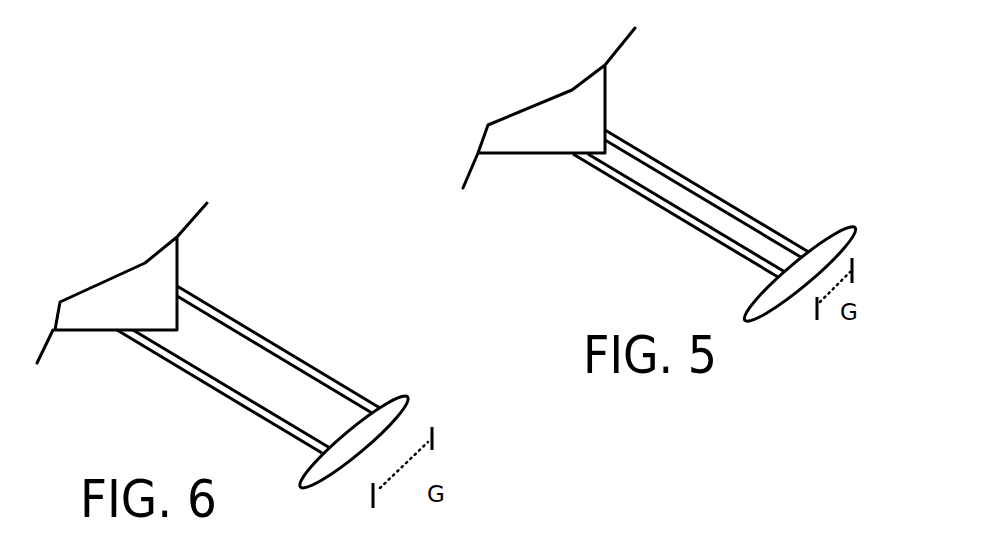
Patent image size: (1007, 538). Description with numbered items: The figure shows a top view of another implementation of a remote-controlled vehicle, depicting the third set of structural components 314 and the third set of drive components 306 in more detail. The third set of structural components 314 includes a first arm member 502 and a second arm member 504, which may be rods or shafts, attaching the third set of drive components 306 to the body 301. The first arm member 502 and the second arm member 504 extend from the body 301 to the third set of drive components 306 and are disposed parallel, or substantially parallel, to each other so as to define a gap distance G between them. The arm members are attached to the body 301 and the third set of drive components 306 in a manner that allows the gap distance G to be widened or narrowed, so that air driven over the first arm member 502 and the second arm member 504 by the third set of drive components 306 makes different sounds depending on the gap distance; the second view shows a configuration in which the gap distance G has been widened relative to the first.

In FIG. 5, the body 301 is at (580, 132).
In FIG. 6, the body 301 is at (143, 303).
In FIG. 5, the third set of structural components 314 is at (703, 147).
In FIG. 5, the first arm member 502 is at (630, 188).
In FIG. 6, the first arm member 502 is at (203, 382).
In FIG. 5, the second arm member 504 is at (762, 224).
In FIG. 6, the second arm member 504 is at (303, 362).
In FIG. 5, the third set of drive components 306 is at (852, 200).
In FIG. 6, the third set of drive components 306 is at (428, 388).